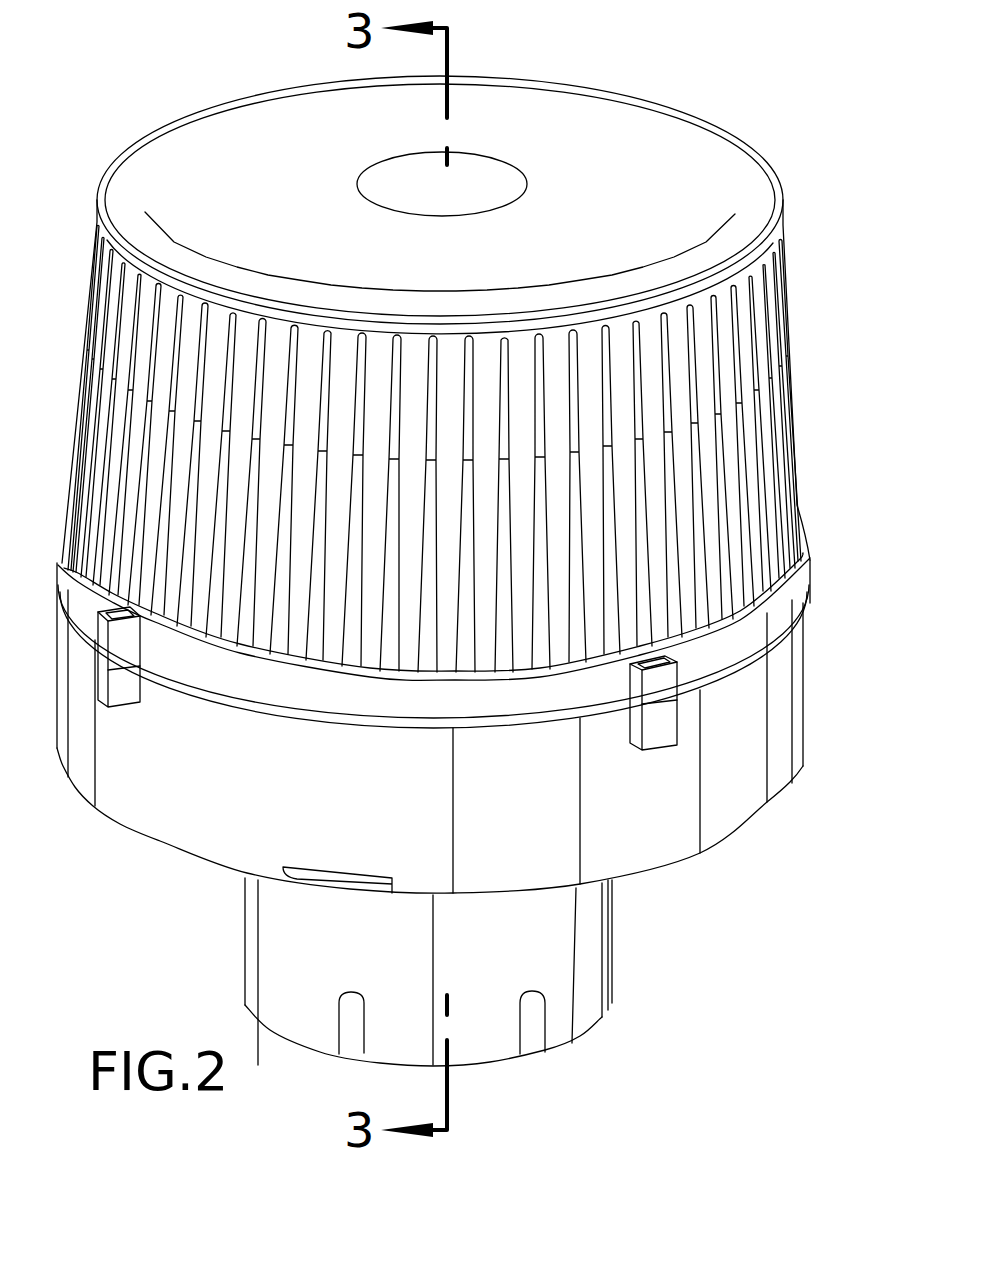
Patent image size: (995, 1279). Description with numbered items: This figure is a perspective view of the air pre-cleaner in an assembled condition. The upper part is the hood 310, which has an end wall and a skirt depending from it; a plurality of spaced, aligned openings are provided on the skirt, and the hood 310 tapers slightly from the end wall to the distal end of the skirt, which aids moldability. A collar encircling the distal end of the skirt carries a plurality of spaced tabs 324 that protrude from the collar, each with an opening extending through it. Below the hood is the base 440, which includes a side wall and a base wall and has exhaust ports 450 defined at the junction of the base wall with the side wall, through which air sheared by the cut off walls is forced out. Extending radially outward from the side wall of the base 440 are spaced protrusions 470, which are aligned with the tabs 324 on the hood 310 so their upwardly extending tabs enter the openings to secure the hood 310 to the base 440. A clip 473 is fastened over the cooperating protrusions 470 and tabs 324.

The hood 310 is at (597, 84).
The tabs 324 is at (668, 677).
The base 440 is at (727, 812).
The exhaust port 450 is at (363, 878).
The protrusions 470 is at (667, 730).
The clip 473 is at (123, 677).